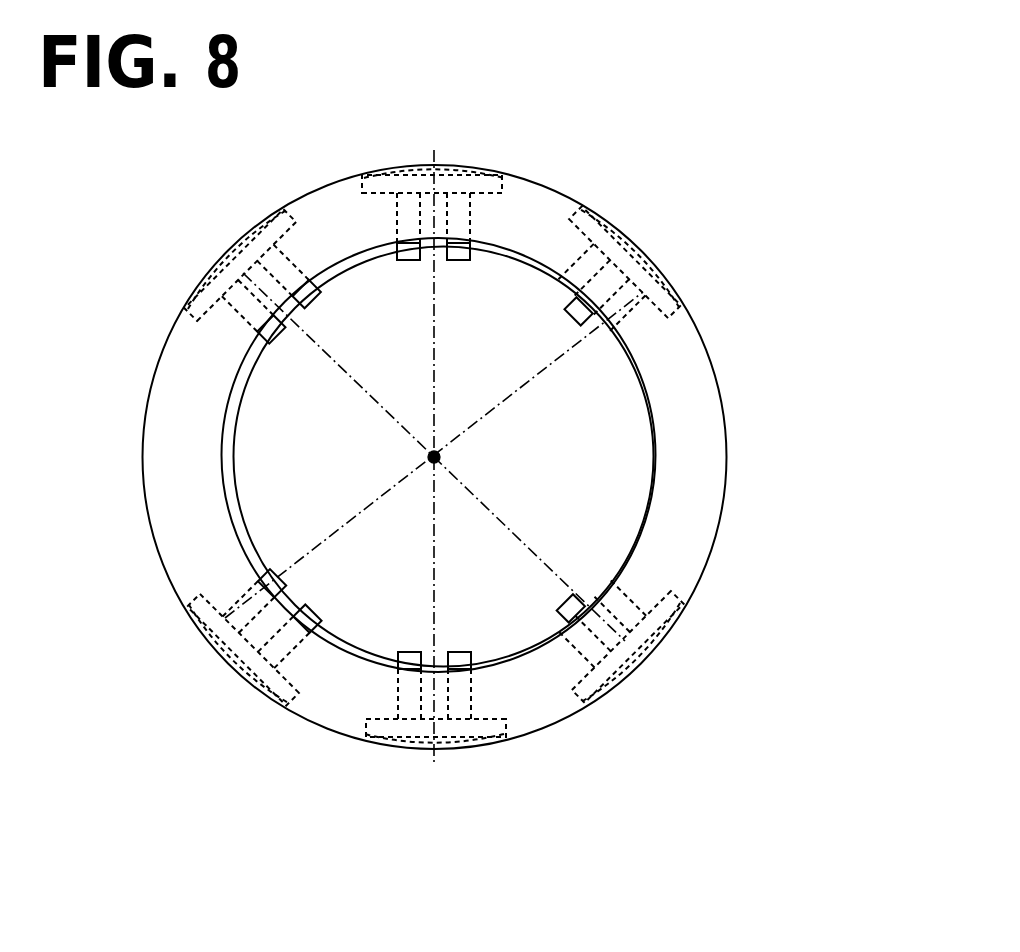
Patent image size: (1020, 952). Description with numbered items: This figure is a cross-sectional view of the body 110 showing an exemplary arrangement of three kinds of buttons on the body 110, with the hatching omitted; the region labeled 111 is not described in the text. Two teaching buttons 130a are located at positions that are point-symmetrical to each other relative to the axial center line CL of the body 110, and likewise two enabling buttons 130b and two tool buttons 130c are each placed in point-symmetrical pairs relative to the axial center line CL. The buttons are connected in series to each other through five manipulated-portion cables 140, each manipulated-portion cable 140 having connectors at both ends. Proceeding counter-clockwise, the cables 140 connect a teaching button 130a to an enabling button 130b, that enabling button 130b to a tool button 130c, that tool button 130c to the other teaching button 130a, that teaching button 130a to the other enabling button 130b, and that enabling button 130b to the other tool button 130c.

The body 110 is at (726, 431).
The inner surface of housing 111 is at (315, 462).
The manipulated-portion cable 140 is at (518, 268).
The axial center line CL is at (440, 458).
The teaching button 130a is at (668, 280).
The enabling button 130b is at (462, 168).
The tool button 130c is at (237, 237).